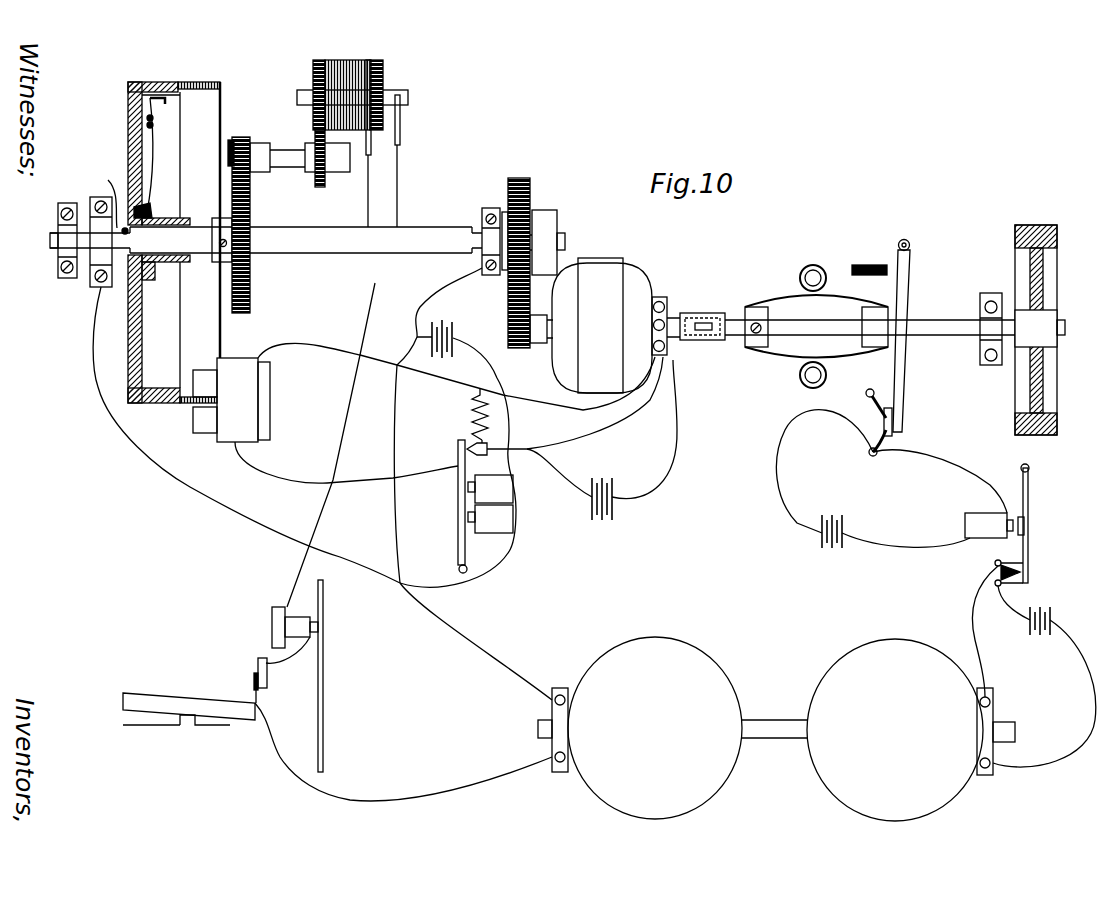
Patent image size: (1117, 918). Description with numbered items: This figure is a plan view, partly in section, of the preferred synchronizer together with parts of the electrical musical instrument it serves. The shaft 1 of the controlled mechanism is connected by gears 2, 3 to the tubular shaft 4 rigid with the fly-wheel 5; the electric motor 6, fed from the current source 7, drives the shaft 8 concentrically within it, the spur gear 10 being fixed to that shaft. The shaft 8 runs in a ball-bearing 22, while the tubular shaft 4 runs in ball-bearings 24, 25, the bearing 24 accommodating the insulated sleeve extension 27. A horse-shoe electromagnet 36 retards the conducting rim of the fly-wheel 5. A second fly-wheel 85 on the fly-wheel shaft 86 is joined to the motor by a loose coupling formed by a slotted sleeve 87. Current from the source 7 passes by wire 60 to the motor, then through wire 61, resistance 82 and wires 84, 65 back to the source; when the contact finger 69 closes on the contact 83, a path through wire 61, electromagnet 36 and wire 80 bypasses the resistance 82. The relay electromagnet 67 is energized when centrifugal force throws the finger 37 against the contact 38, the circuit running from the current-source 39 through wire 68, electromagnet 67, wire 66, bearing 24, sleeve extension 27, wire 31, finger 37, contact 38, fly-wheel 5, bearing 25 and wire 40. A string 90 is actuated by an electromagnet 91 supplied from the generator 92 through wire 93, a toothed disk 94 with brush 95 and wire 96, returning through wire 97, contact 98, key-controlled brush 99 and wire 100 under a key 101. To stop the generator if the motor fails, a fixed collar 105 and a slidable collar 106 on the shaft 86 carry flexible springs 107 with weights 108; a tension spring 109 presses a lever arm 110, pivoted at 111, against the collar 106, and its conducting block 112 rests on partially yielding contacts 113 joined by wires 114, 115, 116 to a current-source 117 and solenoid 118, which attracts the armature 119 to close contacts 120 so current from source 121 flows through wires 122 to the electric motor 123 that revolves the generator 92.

The shaft 1 is at (286, 150).
The gear 2 is at (236, 140).
The gear 3 is at (250, 210).
The tubular shaft 4 is at (426, 234).
The fly-wheel 5 is at (143, 335).
The electric motor 6 is at (610, 266).
The current source 7 is at (612, 505).
The inner shaft 8 is at (565, 244).
The spur gear 10 is at (530, 190).
The ball-bearing 22 is at (57, 262).
The ball-bearing 24 is at (97, 258).
The ball-bearing 25 is at (484, 210).
The sleeve extension 27 is at (104, 199).
The wire 31 is at (153, 160).
The electromagnet 36 is at (250, 418).
The finger 37 is at (166, 108).
The contact 38 is at (163, 82).
The current-source 39 is at (455, 335).
The wire 40 is at (442, 289).
The wire 60 is at (676, 465).
The wire 61 is at (299, 345).
The wire 65 is at (548, 486).
The wire 66 is at (193, 487).
The electromagnet 67 is at (513, 520).
The wire 68 is at (500, 373).
The contact finger 69 is at (458, 501).
The wire 80 is at (283, 480).
The resistance 82 is at (470, 406).
The contact 83 is at (467, 446).
The wire 84 is at (512, 448).
The second fly-wheel 85 is at (1045, 380).
The fly-wheel shaft 86 is at (944, 333).
The slotted sleeve 87 is at (700, 314).
The string 90 is at (325, 701).
The electromagnet 91 is at (290, 628).
The generator 92 is at (672, 728).
The wire 93 is at (485, 663).
The toothed disk 94 is at (383, 70).
The brush 95 is at (366, 160).
The wire 96 is at (346, 281).
The wire 97 is at (287, 668).
The contact 98 is at (258, 670).
The key-controlled brush 99 is at (254, 701).
The wire 100 is at (442, 797).
The key 101 is at (165, 696).
The collar 105 is at (750, 307).
The collar 106 is at (880, 322).
The flexible spring 107 is at (785, 357).
The weight 108 is at (801, 327).
The tension spring 109 is at (875, 265).
The lever arm 110 is at (903, 385).
The pivot 111 is at (907, 243).
The conducting block 112 is at (893, 436).
The partially yielding contact 113 is at (872, 447).
The wire 114 is at (780, 468).
The wire 115 is at (958, 470).
The wire 116 is at (884, 545).
The current-source 117 is at (822, 536).
The solenoid 118 is at (965, 526).
The armature 119 is at (1030, 520).
The contact 120 is at (995, 570).
The current source 121 is at (1048, 615).
The wire 122 is at (979, 645).
The electric motor 123 is at (911, 730).